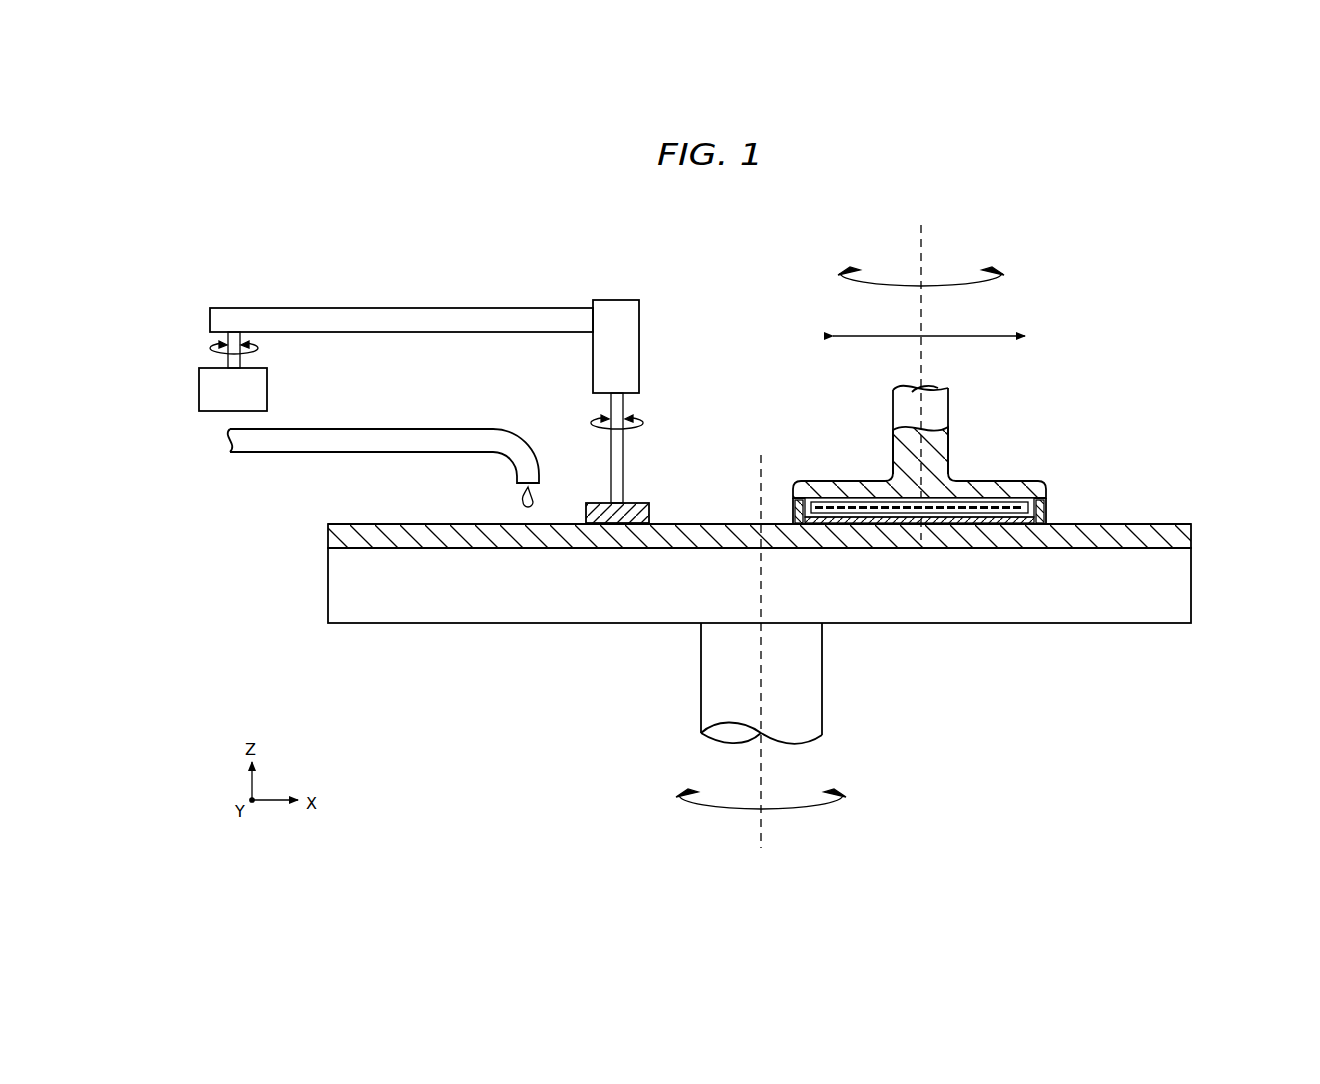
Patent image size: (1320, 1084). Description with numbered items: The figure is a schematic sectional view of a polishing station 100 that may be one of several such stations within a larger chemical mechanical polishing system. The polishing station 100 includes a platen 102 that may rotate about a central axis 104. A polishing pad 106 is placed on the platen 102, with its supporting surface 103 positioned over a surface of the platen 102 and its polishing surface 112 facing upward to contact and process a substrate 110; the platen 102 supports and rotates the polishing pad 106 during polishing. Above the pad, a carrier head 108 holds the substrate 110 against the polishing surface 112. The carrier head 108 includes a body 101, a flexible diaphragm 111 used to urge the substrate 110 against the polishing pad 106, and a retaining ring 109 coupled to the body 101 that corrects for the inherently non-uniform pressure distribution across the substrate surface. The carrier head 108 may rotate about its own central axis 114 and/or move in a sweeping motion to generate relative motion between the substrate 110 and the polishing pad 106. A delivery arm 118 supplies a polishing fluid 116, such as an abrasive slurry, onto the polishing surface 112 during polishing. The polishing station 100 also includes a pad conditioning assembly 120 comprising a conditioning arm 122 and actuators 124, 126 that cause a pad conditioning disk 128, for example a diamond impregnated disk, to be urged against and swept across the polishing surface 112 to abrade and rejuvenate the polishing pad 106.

The polishing station 100 is at (1162, 316).
The body 101 is at (1010, 478).
The platen 102 is at (1180, 585).
The supporting surface 103 is at (1102, 548).
The central axis 104 is at (765, 835).
The polishing pad 106 is at (1191, 534).
The carrier head 108 is at (950, 403).
The retaining ring 109 is at (1046, 510).
The substrate 110 is at (880, 523).
The flexible diaphragm 111 is at (830, 505).
The polishing surface 112 is at (717, 522).
The central axis 114 is at (921, 235).
The polishing fluid 116 is at (521, 497).
The delivery arm 118 is at (400, 429).
The pad conditioning assembly 120 is at (276, 278).
The conditioning arm 122 is at (461, 308).
The actuator 124 is at (199, 383).
The actuator 126 is at (640, 314).
The pad conditioning disk 128 is at (640, 503).